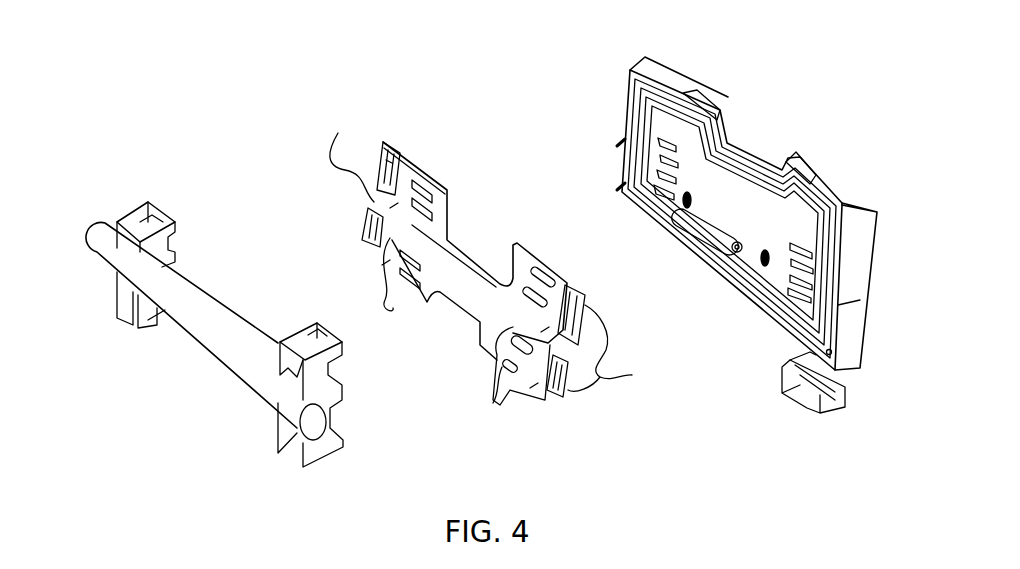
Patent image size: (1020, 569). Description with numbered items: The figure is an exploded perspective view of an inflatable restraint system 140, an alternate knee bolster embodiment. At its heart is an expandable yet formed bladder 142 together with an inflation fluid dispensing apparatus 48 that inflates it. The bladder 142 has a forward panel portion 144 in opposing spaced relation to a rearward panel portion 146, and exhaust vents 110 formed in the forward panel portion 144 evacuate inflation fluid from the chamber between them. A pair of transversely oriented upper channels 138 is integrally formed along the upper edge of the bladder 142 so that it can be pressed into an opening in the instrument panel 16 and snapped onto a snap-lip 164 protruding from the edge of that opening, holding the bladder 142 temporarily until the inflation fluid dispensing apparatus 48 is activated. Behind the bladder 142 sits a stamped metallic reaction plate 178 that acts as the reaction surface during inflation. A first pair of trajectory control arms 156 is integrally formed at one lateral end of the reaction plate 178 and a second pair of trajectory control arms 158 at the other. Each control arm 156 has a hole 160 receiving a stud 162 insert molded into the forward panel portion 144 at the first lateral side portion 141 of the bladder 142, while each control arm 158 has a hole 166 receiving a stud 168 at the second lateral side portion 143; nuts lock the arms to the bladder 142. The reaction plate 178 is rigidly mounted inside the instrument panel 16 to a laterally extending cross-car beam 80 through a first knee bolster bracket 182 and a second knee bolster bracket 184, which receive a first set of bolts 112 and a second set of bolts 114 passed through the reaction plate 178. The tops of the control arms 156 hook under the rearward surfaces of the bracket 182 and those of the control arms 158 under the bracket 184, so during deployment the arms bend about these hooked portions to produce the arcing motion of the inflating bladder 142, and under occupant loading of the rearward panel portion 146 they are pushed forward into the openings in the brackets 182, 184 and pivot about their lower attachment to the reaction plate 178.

The inflatable restraint system 140 is at (490, 94).
The cross-car beam 80 is at (210, 298).
The second knee bolster bracket 184 is at (142, 202).
The first knee bolster bracket 182 is at (298, 322).
The reaction plate 178 is at (421, 168).
The second set of bolts 114 is at (395, 292).
The first set of bolts 112 is at (497, 375).
The second pair of trajectory control arms 158 is at (363, 156).
The hole 166 is at (365, 237).
The hole 160 is at (580, 318).
The first pair of trajectory control arms 156 is at (620, 375).
The first lateral side portion 141 is at (838, 196).
The second lateral side portion 143 is at (632, 63).
The bladder 142 is at (663, 71).
The upper channels 138 is at (702, 91).
The forward panel portion 144 is at (734, 162).
The rearward panel portion 146 is at (780, 168).
The stud 168 is at (620, 187).
The exhaust vents 110 is at (683, 208).
The inflation fluid dispensing apparatus 48 is at (738, 252).
The snap-lip 164 is at (790, 360).
The instrument panel 16 is at (800, 392).
The stud 162 is at (838, 305).